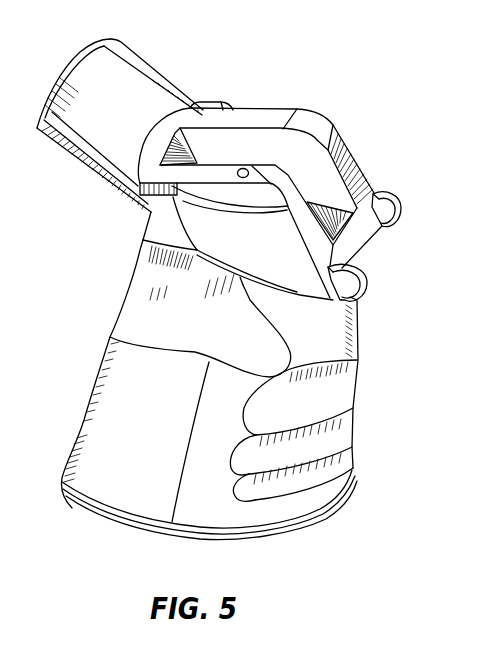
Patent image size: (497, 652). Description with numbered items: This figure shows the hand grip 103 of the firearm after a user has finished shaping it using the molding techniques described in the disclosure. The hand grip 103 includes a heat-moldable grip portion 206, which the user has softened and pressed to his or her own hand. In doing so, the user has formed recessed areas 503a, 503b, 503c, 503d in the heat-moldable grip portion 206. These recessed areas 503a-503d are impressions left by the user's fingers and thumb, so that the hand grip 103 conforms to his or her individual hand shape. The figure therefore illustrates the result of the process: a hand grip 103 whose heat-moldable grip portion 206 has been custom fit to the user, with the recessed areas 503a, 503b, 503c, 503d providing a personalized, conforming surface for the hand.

The hand grip 103 is at (333, 80).
The heat-moldable grip portion 206 is at (241, 379).
The recessed area 503a is at (143, 297).
The recessed area 503b is at (343, 387).
The recessed area 503c is at (343, 427).
The recessed area 503d is at (330, 467).